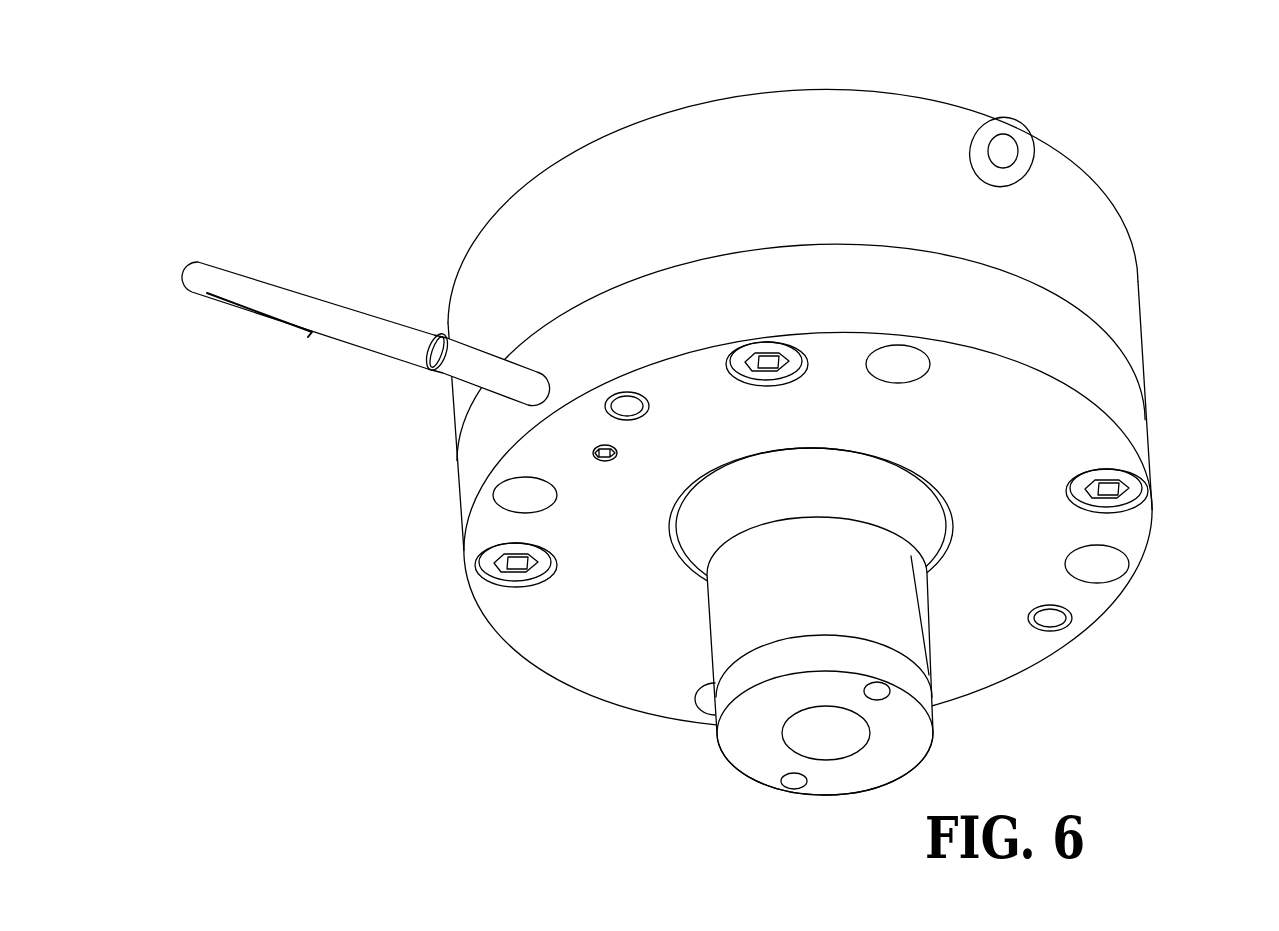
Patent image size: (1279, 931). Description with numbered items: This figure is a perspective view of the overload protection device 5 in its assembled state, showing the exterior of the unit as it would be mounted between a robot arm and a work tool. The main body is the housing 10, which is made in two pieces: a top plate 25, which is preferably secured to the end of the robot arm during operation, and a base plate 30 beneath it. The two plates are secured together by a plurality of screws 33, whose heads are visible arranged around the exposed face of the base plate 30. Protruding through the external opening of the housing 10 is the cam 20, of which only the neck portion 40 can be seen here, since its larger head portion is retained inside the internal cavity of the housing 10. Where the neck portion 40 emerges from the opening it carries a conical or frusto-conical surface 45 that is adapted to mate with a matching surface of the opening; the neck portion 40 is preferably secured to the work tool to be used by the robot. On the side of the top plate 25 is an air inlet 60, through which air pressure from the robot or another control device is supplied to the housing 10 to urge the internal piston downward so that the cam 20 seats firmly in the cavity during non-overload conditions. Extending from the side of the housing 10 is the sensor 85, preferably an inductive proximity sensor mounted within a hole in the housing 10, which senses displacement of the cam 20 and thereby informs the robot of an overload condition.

The overload protection device 5 is at (844, 466).
The housing 10 is at (855, 597).
The cam 20 is at (818, 811).
The top plate 25 is at (800, 297).
The base plate 30 is at (835, 597).
The screws 33 is at (807, 353).
The neck portion 40 is at (845, 703).
The conical or frusto-conical surface 45 is at (696, 552).
The air inlet 60 is at (1015, 137).
The sensor 85 is at (447, 370).